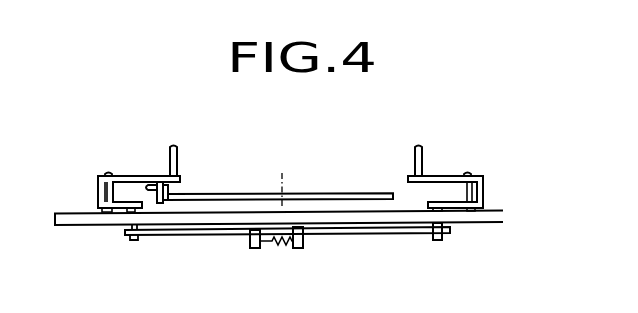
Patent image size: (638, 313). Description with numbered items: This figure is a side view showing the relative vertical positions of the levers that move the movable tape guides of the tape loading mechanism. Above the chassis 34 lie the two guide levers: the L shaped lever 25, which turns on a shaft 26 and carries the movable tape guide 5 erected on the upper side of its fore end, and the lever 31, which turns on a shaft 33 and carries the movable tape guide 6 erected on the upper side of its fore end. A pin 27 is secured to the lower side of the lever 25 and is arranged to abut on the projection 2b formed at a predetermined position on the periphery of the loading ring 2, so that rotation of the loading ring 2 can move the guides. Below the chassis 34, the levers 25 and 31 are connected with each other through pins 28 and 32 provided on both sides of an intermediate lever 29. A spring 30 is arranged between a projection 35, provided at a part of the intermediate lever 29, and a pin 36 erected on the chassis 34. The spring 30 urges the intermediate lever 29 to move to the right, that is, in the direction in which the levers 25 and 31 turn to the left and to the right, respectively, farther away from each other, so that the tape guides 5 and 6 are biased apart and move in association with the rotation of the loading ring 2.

The loading ring 2 is at (352, 193).
The projection 2b is at (180, 190).
The tape guide 5 is at (173, 146).
The tape guide 6 is at (415, 148).
The L shaped lever 25 is at (127, 176).
The shaft 26 is at (108, 174).
The pin 27 is at (149, 183).
The pin 28 is at (133, 241).
The intermediate lever 29 is at (185, 236).
The spring 30 is at (283, 247).
The lever 31 is at (440, 176).
The pin 32 is at (435, 241).
The shaft 33 is at (467, 173).
The chassis 34 is at (68, 210).
The projection 35 is at (250, 246).
The pin 36 is at (303, 244).